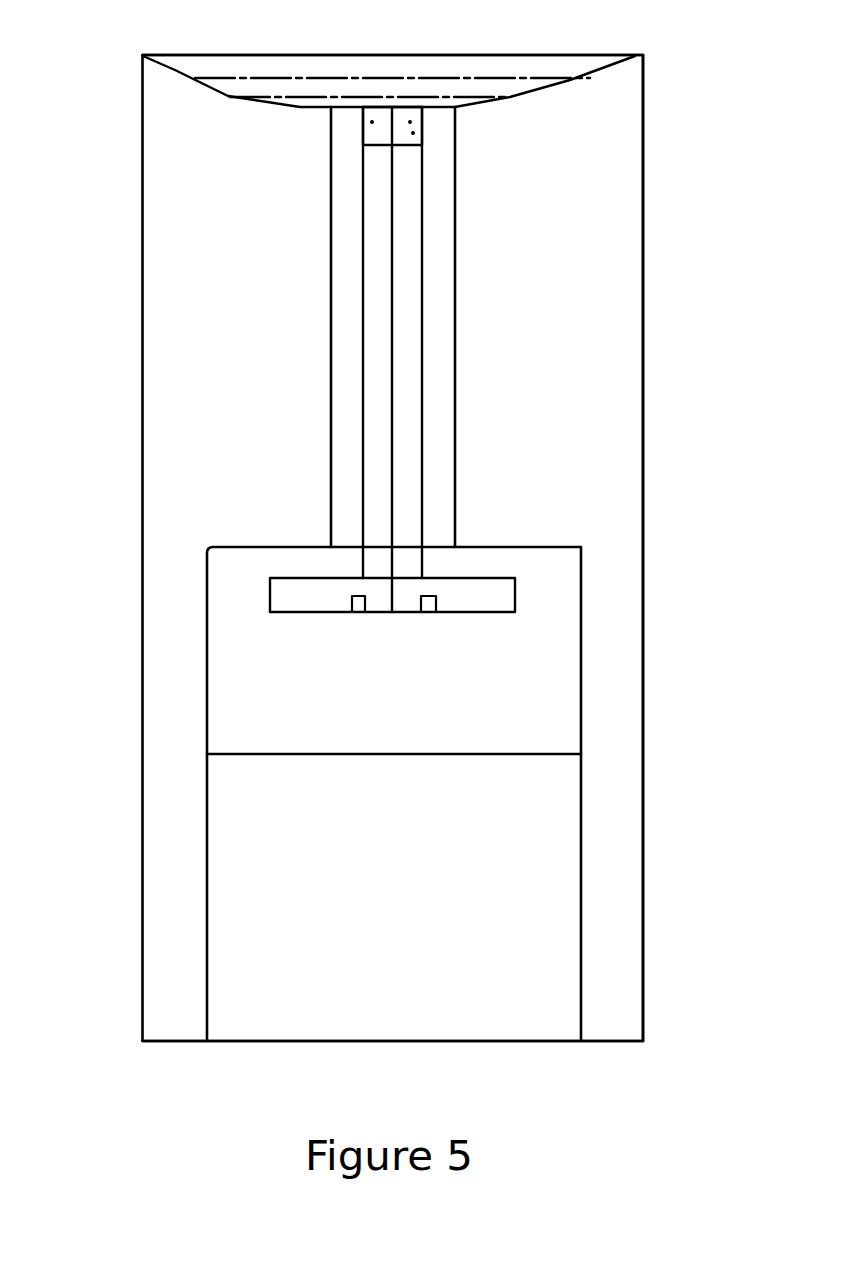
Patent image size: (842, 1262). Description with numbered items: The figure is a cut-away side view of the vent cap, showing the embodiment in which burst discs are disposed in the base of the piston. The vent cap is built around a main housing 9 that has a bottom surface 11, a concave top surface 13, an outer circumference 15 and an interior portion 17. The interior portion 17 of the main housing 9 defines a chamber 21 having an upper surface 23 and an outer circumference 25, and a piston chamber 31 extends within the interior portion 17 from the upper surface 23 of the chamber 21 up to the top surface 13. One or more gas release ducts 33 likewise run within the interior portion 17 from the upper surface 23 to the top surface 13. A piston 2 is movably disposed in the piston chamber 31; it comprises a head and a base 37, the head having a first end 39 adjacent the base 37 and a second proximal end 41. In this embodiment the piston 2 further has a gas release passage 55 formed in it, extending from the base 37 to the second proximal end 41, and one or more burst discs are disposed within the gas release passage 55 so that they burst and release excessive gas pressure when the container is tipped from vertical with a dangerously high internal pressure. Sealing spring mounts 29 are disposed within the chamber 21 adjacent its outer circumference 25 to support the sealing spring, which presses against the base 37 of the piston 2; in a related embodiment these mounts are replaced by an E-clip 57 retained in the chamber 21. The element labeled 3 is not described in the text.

The piston 2 is at (367, 360).
The lens element 3 is at (440, 27).
The main housing 9 is at (663, 208).
The bottom surface 11 is at (165, 1023).
The concave top surface 13 is at (193, 90).
The outer circumference 15 is at (662, 920).
The interior portion 17 is at (575, 380).
The chamber 21 is at (394, 897).
The upper surface 23 is at (213, 538).
The outer circumference 25 is at (562, 970).
The sealing spring mounts 29 is at (188, 745).
The piston chamber 31 is at (452, 168).
The gas release ducts 33 is at (442, 270).
The base 37 is at (318, 568).
The first end 39 is at (473, 565).
The second proximal end 41 is at (360, 130).
The gas release passage 55 is at (423, 623).
The E-clip 57 is at (495, 780).